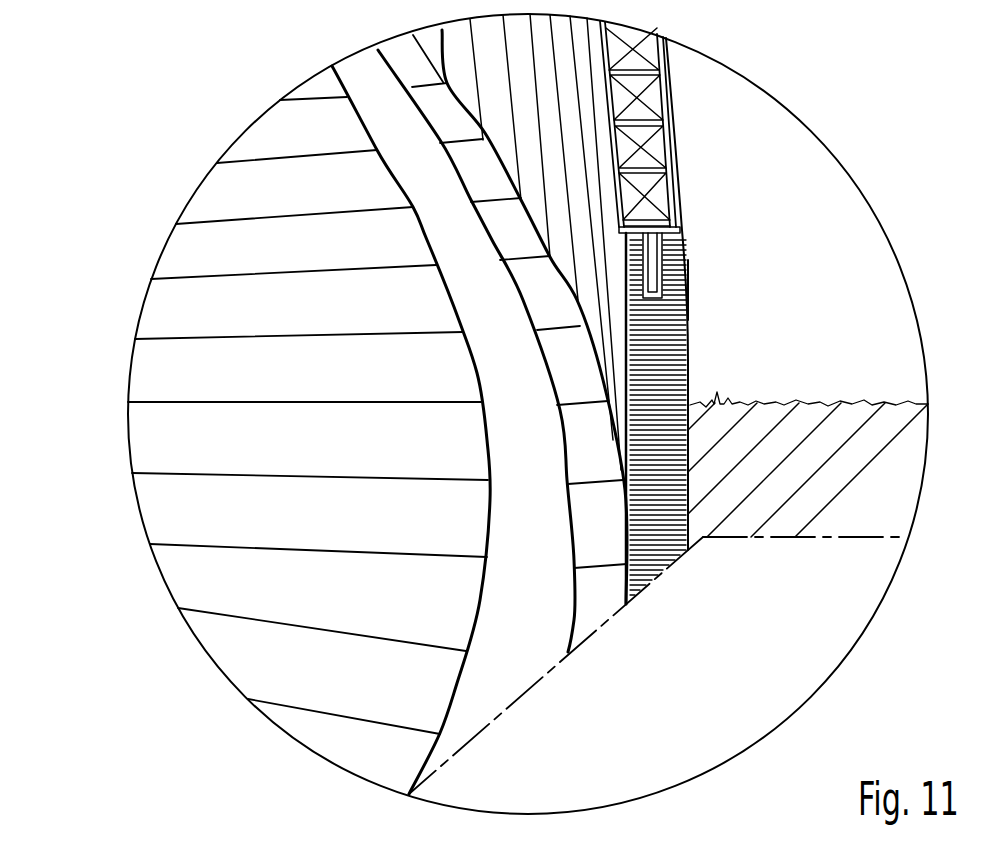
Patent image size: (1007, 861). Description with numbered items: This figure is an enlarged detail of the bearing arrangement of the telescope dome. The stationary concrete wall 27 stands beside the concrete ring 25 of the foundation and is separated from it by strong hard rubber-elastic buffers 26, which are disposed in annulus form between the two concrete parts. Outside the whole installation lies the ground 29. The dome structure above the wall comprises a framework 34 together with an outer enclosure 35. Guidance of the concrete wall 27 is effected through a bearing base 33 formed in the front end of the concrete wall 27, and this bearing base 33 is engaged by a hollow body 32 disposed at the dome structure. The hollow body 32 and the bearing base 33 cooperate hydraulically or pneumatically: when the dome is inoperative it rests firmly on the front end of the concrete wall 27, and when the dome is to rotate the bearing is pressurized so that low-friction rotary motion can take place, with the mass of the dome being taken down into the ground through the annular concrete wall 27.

The concrete ring 25 is at (272, 364).
The rubber-elastic buffers 26 is at (517, 509).
The concrete wall 27 is at (663, 343).
The ground 29 is at (867, 457).
The hollow body 32 is at (683, 253).
The bearing base 33 is at (708, 287).
The framework 34 is at (637, 97).
The outer enclosure 35 is at (680, 152).